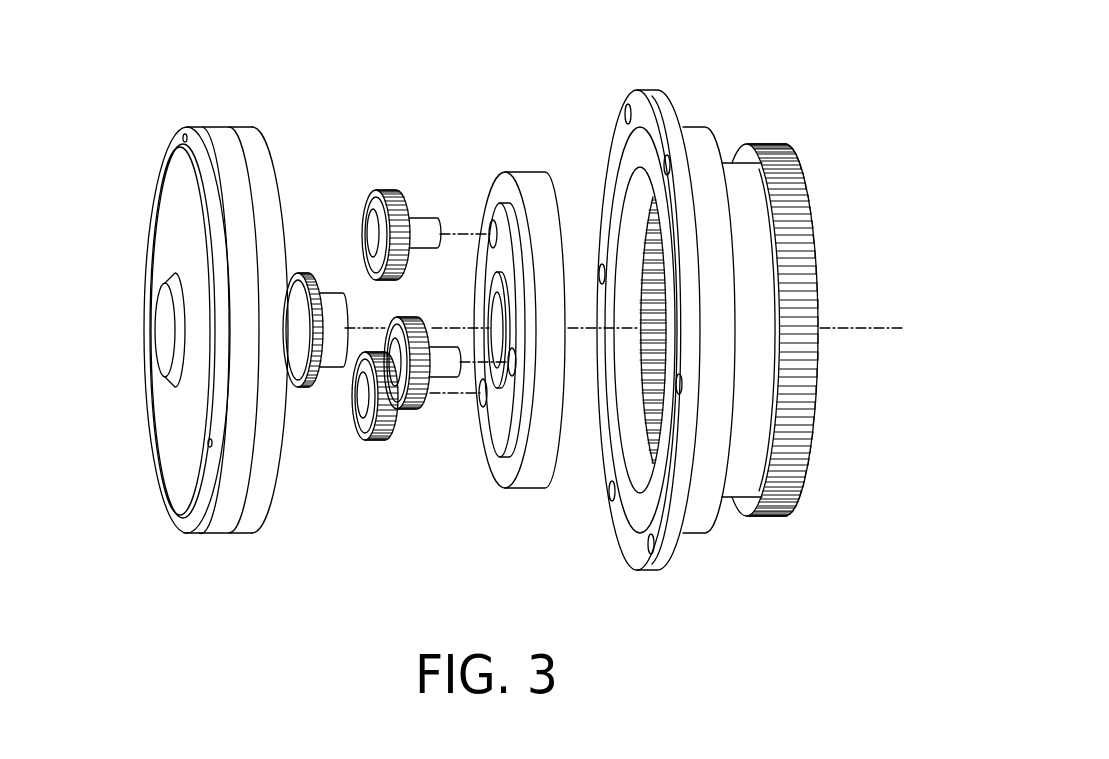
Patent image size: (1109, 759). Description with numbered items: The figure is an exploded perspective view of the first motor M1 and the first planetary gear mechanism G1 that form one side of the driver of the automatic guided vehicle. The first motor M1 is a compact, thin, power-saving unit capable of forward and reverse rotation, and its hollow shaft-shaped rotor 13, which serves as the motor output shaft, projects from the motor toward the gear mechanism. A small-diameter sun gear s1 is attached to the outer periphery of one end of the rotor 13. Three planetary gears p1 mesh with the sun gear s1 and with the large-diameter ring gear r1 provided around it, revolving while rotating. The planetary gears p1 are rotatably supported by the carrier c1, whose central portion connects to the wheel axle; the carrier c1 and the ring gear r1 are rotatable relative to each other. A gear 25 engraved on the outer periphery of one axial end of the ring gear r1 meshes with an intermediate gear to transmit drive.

The first motor M1 is at (118, 230).
The first planetary gear mechanism G1 is at (453, 128).
The sun gear s1 is at (297, 283).
The planetary gears p1 is at (388, 190).
The rotor 13 is at (332, 362).
The carrier c1 is at (528, 484).
The ring gear r1 is at (695, 137).
The gear 25 is at (772, 517).